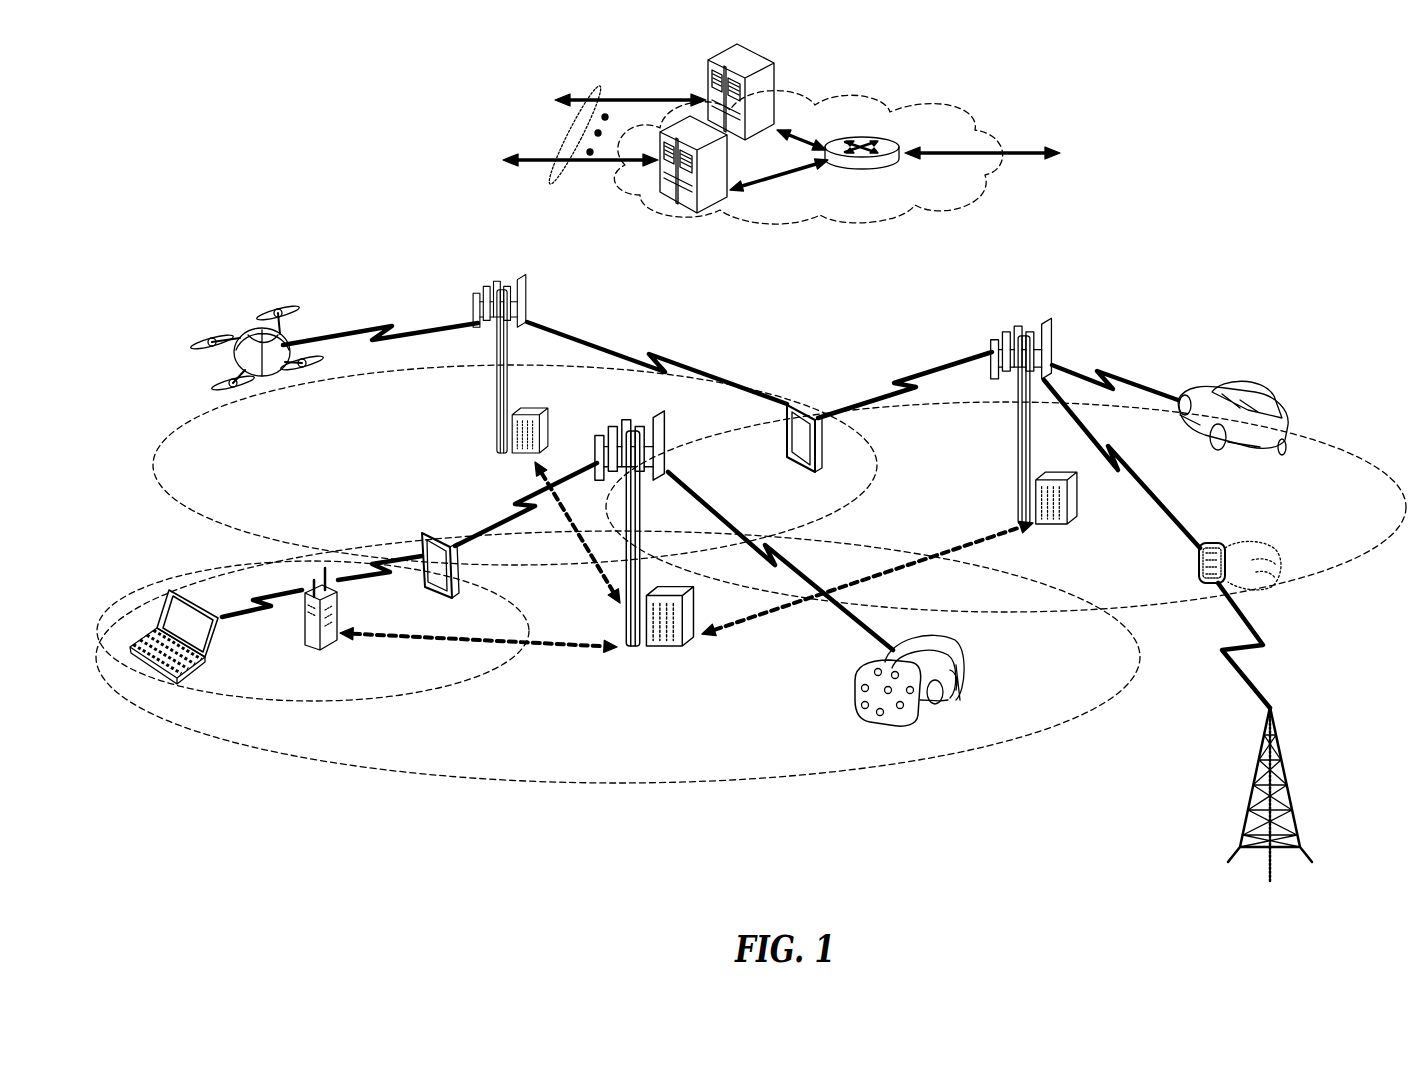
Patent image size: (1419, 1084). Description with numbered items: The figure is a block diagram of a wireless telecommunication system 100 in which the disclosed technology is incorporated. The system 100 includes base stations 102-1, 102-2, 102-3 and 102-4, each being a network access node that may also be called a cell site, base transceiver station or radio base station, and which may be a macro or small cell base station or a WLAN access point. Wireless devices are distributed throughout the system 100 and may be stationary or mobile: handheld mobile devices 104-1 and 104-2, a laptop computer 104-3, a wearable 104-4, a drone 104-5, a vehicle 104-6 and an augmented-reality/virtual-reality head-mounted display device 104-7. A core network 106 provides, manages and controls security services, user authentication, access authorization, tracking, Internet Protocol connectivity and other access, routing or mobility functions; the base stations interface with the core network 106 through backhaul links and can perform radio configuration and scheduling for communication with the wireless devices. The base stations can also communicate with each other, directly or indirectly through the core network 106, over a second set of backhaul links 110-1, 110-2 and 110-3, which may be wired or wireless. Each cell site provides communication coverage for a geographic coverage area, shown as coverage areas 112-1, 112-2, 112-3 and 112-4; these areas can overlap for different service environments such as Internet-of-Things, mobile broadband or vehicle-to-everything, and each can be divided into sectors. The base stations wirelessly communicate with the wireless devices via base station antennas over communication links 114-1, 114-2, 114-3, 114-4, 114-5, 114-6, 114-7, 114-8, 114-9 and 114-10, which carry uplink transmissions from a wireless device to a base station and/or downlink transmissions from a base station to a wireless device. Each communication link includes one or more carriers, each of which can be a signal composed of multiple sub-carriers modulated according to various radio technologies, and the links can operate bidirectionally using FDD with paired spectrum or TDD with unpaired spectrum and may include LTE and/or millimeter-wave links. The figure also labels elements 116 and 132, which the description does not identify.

The wireless telecommunication system 100 is at (1311, 138).
The base station 102-1 is at (627, 655).
The base station 102-2 is at (496, 415).
The base station 102-3 is at (1017, 440).
The base station 102-4 is at (306, 640).
The handheld mobile device 104-1 is at (505, 578).
The handheld mobile device 104-2 is at (786, 440).
The laptop computer 104-3 is at (146, 679).
The wearable 104-4 is at (1215, 544).
The drone 104-5 is at (273, 380).
The vehicle 104-6 is at (1246, 393).
The head-mounted display device 104-7 is at (966, 668).
The core network 106 is at (897, 222).
The backhaul link 110-1 is at (376, 641).
The backhaul link 110-2 is at (936, 568).
The backhaul link 110-3 is at (583, 570).
The geographic coverage area 112-1 is at (575, 785).
The geographic coverage area 112-2 is at (445, 699).
The geographic coverage area 112-3 is at (215, 516).
The geographic coverage area 112-4 is at (1306, 437).
The communication link 114-1 is at (790, 560).
The communication link 114-2 is at (517, 505).
The communication link 114-3 is at (236, 610).
The communication link 114-4 is at (376, 590).
The communication link 114-5 is at (386, 325).
The communication link 114-6 is at (660, 362).
The communication link 114-7 is at (908, 380).
The communication link 114-8 is at (1125, 462).
The communication link 114-9 is at (1105, 380).
The communication link 114-10 is at (1252, 646).
The broadcast / transmission tower 116 is at (1288, 780).
The satellite / antenna link 132 is at (574, 182).